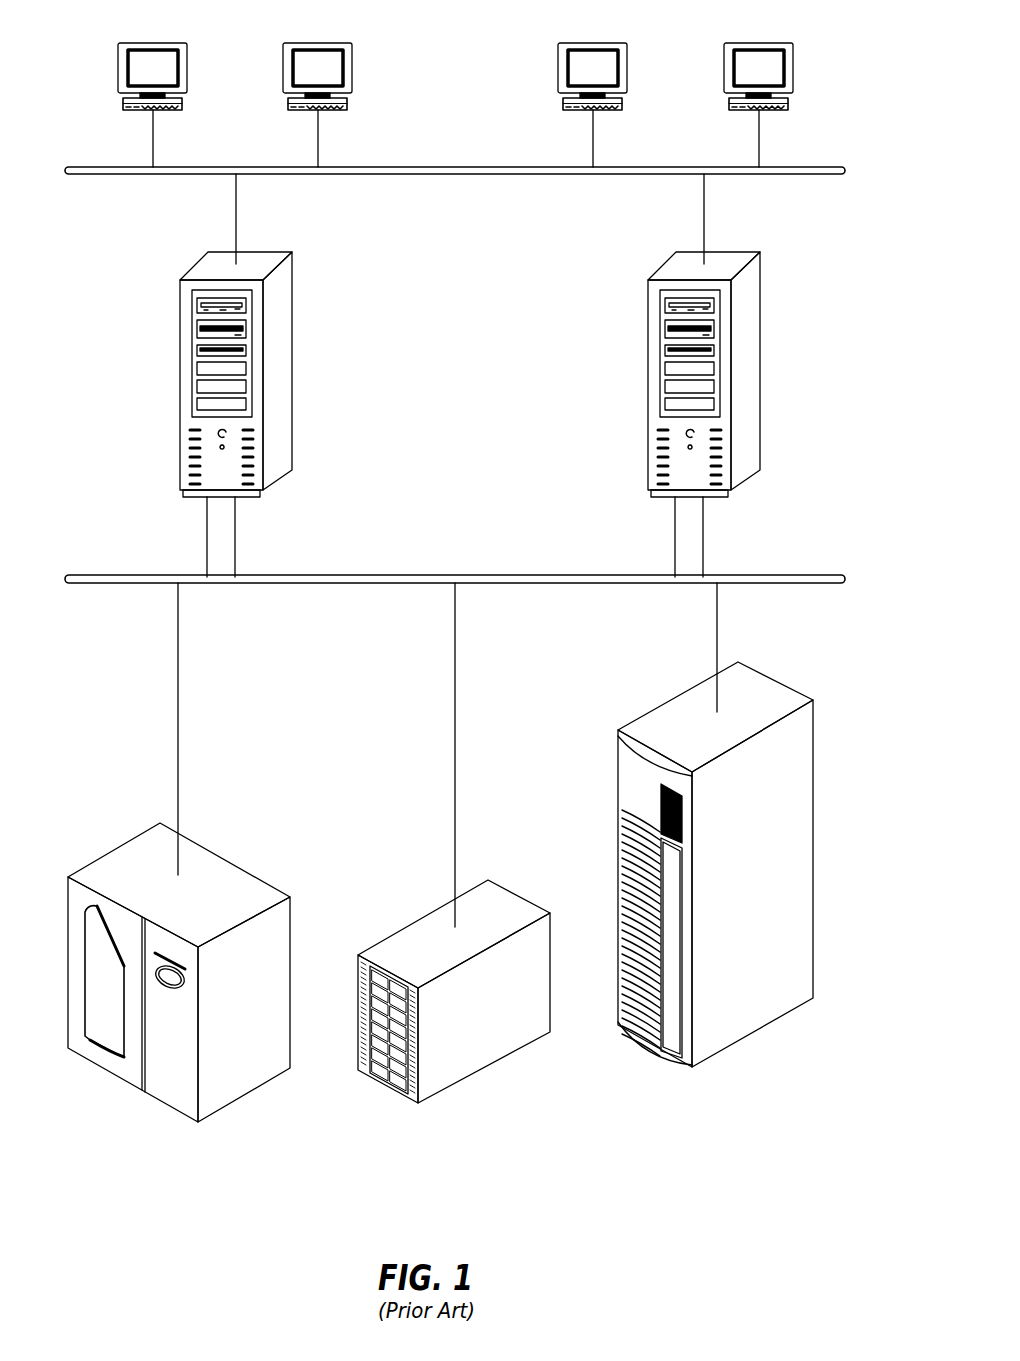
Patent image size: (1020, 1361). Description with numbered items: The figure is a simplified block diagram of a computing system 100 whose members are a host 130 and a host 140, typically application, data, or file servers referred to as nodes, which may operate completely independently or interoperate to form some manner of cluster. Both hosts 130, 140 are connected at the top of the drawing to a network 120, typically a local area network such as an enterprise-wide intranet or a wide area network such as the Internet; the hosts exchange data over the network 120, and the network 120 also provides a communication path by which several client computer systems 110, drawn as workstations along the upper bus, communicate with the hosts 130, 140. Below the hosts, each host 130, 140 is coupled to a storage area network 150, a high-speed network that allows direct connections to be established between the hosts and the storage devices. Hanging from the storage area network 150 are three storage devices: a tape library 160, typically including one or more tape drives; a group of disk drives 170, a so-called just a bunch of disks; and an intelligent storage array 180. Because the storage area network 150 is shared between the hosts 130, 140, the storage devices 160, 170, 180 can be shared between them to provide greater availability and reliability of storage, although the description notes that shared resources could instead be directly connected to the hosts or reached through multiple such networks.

The computing system 100 is at (484, 674).
The client computer systems 110 is at (793, 75).
The network 120 is at (808, 174).
The host 130 is at (178, 375).
The host 140 is at (646, 375).
The storage area network 150 is at (758, 575).
The tape library 160 is at (217, 873).
The group of disk drives 170 is at (492, 902).
The intelligent storage array 180 is at (815, 880).